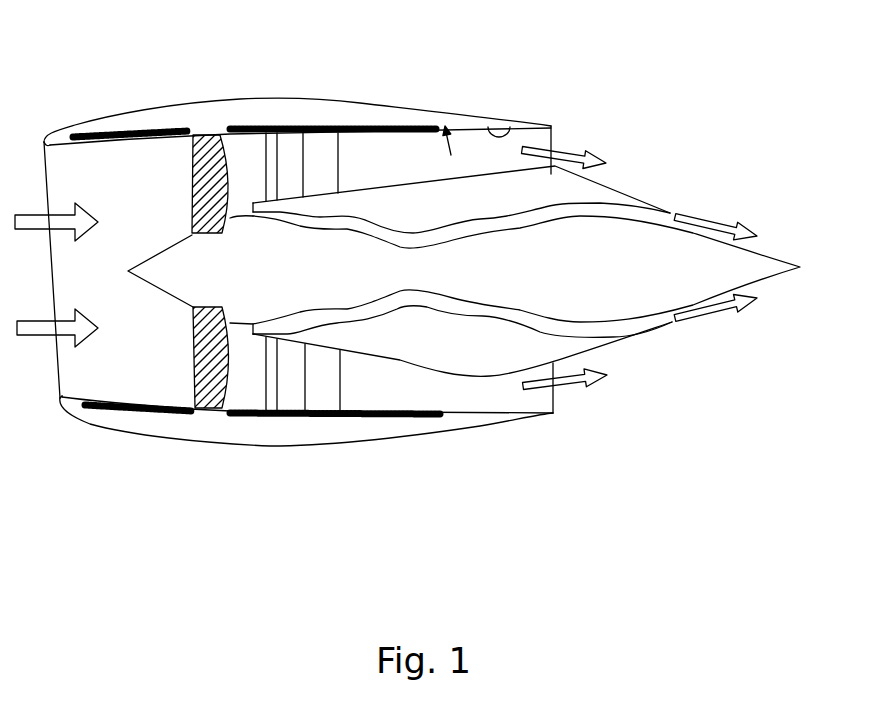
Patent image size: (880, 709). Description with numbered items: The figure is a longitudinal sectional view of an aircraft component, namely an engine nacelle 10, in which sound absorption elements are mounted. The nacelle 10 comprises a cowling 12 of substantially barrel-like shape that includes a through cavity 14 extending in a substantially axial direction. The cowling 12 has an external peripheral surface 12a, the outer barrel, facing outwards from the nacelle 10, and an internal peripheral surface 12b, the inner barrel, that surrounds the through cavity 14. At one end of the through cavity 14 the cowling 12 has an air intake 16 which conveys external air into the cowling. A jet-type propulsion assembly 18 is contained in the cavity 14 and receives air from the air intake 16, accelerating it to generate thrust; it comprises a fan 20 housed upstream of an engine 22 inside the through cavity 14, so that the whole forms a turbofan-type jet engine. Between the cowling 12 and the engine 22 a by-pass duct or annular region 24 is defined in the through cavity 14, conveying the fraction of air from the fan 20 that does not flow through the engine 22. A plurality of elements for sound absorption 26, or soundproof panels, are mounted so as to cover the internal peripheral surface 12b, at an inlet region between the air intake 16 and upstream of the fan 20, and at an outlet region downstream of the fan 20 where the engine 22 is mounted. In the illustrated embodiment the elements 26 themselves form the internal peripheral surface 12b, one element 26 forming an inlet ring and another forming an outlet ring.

The engine nacelle 10 is at (264, 70).
The cowling 12 is at (123, 104).
The external peripheral surface 12a is at (162, 113).
The internal peripheral surface 12b is at (510, 126).
The through cavity 14 is at (452, 157).
The air intake 16 is at (60, 395).
The propulsion assembly 18 is at (240, 376).
The fan 20 is at (207, 409).
The engine 22 is at (477, 358).
The by-pass duct 24 is at (407, 171).
The element for sound absorption 26 is at (97, 135).